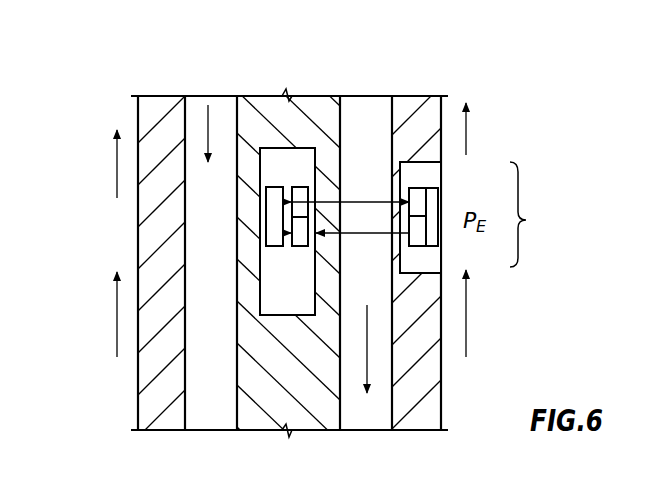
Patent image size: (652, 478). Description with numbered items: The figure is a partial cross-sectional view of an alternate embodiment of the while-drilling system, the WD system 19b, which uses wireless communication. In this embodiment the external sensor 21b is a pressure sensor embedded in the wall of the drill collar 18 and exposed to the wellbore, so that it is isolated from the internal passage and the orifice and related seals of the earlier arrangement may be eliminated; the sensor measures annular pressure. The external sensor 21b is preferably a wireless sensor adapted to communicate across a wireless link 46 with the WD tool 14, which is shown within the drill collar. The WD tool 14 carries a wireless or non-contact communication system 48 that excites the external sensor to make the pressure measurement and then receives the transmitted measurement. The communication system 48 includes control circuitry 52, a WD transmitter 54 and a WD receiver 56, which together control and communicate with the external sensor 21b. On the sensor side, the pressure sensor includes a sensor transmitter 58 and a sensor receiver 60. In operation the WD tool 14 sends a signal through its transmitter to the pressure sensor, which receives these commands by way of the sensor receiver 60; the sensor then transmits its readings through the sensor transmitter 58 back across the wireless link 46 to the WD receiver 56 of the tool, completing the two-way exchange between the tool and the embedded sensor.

The drill collar 18 is at (155, 96).
The WD tool 14 is at (228, 96).
The communication system 48 is at (266, 148).
The wireless link 46 is at (370, 235).
The WD system 19b is at (398, 66).
The control circuitry 52 is at (275, 221).
The WD transmitter 54 is at (302, 196).
The WD receiver 56 is at (300, 242).
The sensor receiver 60 is at (416, 190).
The sensor transmitter 58 is at (418, 234).
The external sensor 21b is at (526, 220).